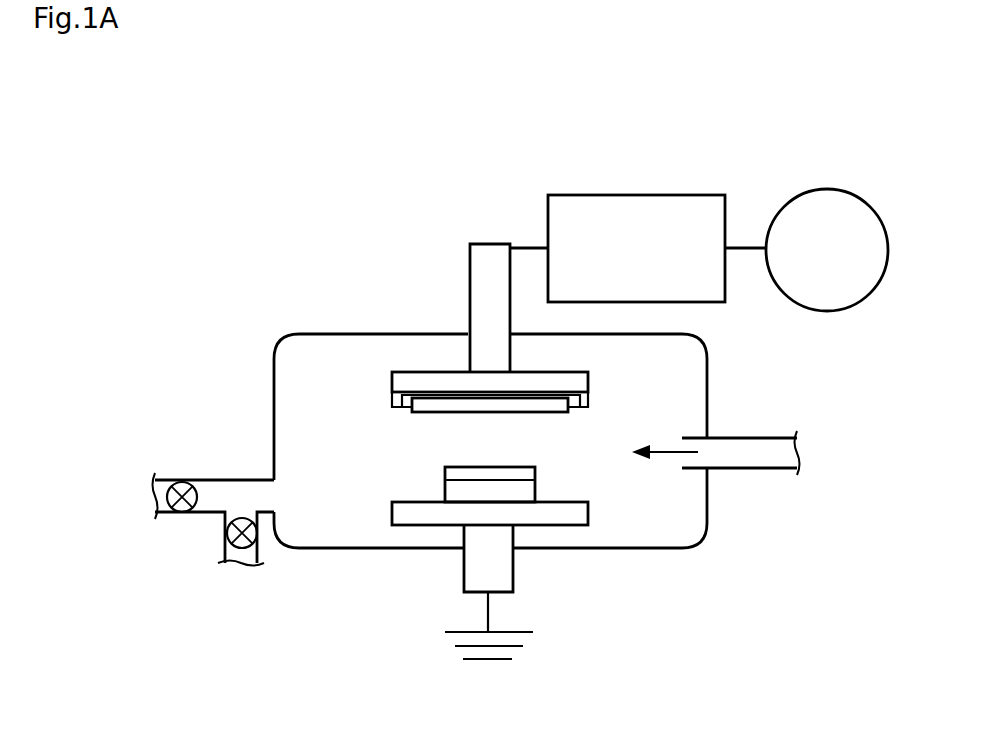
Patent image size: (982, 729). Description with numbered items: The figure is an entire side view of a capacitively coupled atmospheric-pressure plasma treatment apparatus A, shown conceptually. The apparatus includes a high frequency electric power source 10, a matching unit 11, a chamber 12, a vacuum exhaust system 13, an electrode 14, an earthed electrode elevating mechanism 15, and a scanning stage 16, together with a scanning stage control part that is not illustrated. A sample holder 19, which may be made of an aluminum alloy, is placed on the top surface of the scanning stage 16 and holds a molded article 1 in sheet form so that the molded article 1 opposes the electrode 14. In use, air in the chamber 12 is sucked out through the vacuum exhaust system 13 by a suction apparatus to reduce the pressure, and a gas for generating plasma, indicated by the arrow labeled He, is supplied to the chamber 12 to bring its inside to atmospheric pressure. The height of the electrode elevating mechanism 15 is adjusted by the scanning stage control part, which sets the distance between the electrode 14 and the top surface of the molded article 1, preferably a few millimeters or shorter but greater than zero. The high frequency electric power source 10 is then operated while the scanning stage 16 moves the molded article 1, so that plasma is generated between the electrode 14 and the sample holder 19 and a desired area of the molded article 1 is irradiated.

The molded article 1 is at (445, 470).
The high frequency electric power source 10 is at (824, 189).
The matching unit 11 is at (645, 195).
The chamber 12 is at (320, 333).
The vacuum exhaust system 13 is at (215, 480).
The electrode 14 is at (553, 412).
The earthed electrode elevating mechanism 15 is at (464, 570).
The scanning stage 16 is at (551, 526).
The sample holder 19 is at (537, 487).
The atmospheric-pressure plasma treatment apparatus A is at (387, 286).
The helium gas supply He is at (741, 453).